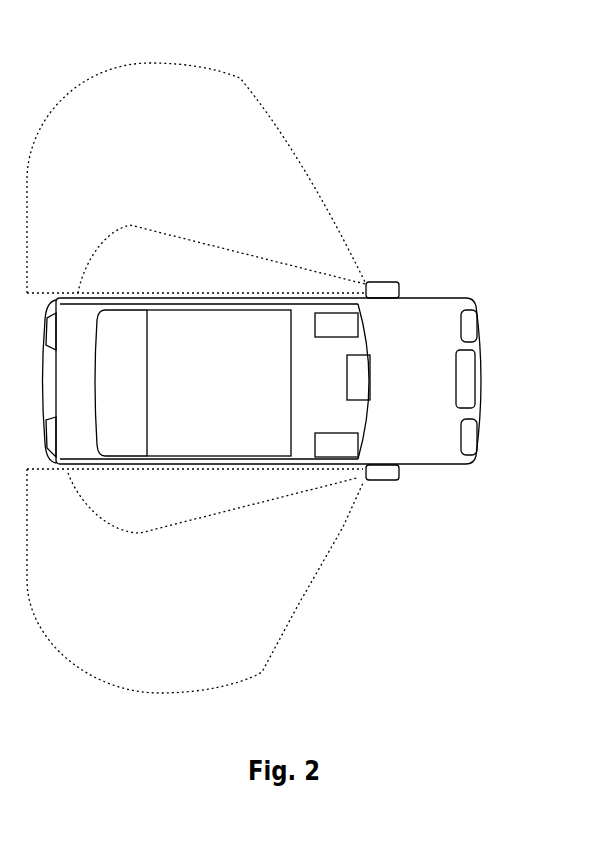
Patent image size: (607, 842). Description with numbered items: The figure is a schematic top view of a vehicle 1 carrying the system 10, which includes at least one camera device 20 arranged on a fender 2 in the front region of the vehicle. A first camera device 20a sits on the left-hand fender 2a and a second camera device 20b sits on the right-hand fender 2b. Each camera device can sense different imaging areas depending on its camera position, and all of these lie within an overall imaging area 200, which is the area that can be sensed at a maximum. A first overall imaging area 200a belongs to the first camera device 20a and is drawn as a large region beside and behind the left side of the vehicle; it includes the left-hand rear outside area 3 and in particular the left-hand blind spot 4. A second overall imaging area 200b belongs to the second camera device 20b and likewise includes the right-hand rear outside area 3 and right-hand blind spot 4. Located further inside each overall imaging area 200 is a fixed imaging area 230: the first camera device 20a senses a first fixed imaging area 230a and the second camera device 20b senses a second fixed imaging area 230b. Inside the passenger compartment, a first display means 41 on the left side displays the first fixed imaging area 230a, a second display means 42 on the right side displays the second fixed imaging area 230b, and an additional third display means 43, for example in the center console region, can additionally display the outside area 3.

The vehicle 1 is at (433, 297).
The fender 2 is at (496, 363).
The left-hand fender 2a is at (432, 262).
The right-hand fender 2b is at (434, 474).
The rear outside area 3 is at (314, 669).
The blind spot 4 is at (248, 485).
The system 10 is at (471, 146).
The camera device 20 is at (457, 370).
The first camera device 20a is at (385, 282).
The second camera device 20b is at (385, 481).
The first display means 41 is at (358, 323).
The second display means 42 is at (355, 440).
The third display means 43 is at (372, 375).
The overall imaging area 200 is at (282, 364).
The first overall imaging area 200a is at (240, 80).
The second overall imaging area 200b is at (342, 528).
The fixed imaging area 230 is at (255, 378).
The first fixed imaging area 230a is at (222, 247).
The second fixed imaging area 230b is at (220, 513).